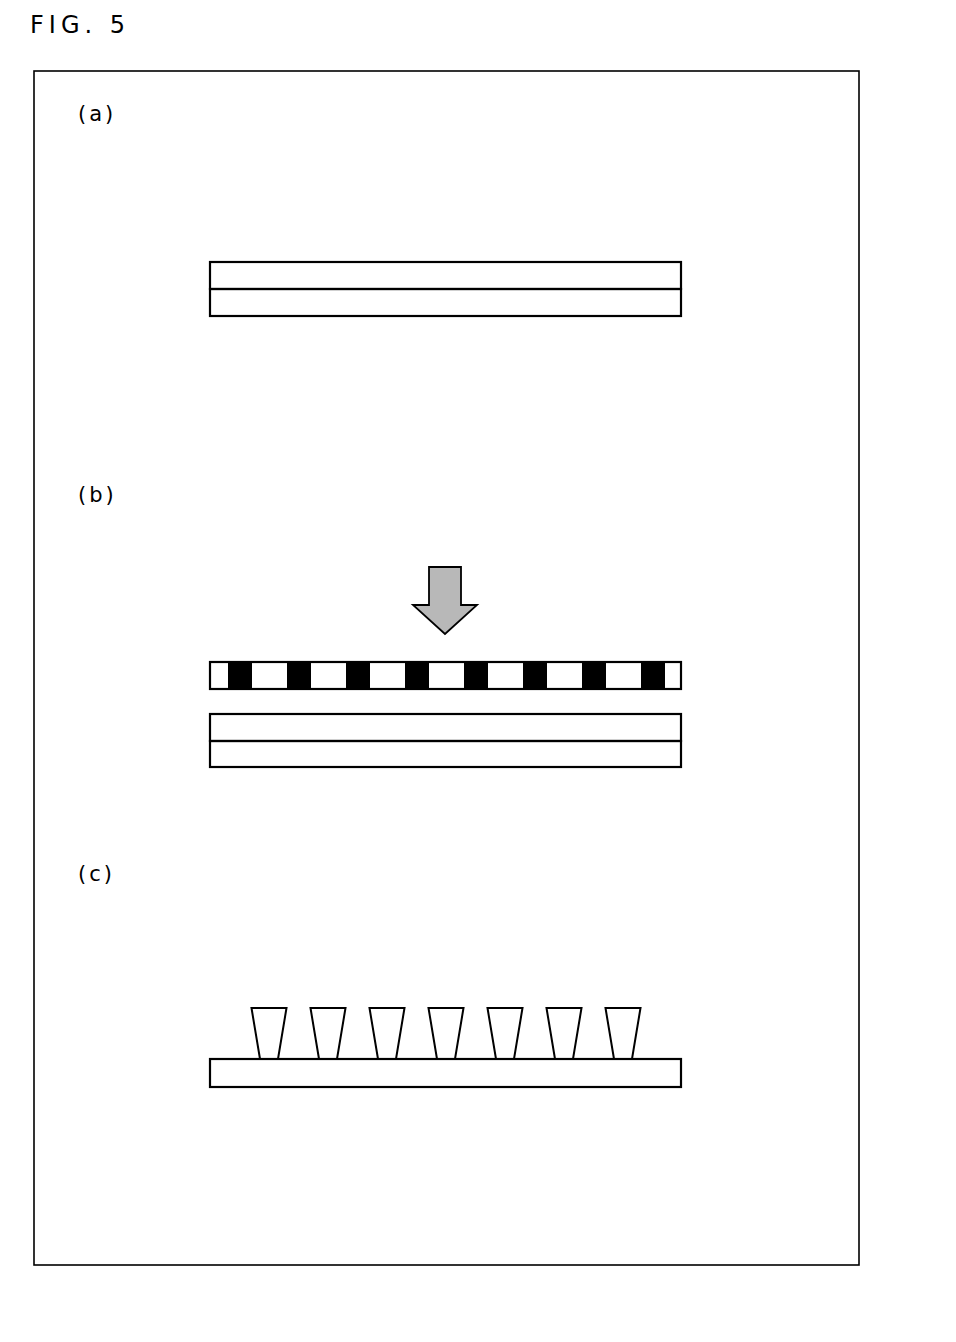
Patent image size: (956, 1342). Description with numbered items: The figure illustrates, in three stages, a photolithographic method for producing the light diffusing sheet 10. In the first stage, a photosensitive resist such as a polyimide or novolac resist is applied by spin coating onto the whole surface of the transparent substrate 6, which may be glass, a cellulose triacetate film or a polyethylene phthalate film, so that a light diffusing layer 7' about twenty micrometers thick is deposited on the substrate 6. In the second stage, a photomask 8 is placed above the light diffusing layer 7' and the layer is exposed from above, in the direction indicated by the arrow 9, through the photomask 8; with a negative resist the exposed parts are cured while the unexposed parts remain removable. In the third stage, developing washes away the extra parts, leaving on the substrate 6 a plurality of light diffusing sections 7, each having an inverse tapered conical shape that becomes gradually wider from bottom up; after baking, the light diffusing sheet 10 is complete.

The substrate 6 is at (675, 304).
The light diffusing layer 7' is at (475, 502).
The light diffusing sections 7 is at (469, 1033).
The photomask 8 is at (675, 678).
The arrow 9 is at (433, 588).
The light diffusing sheet 10 is at (697, 1110).